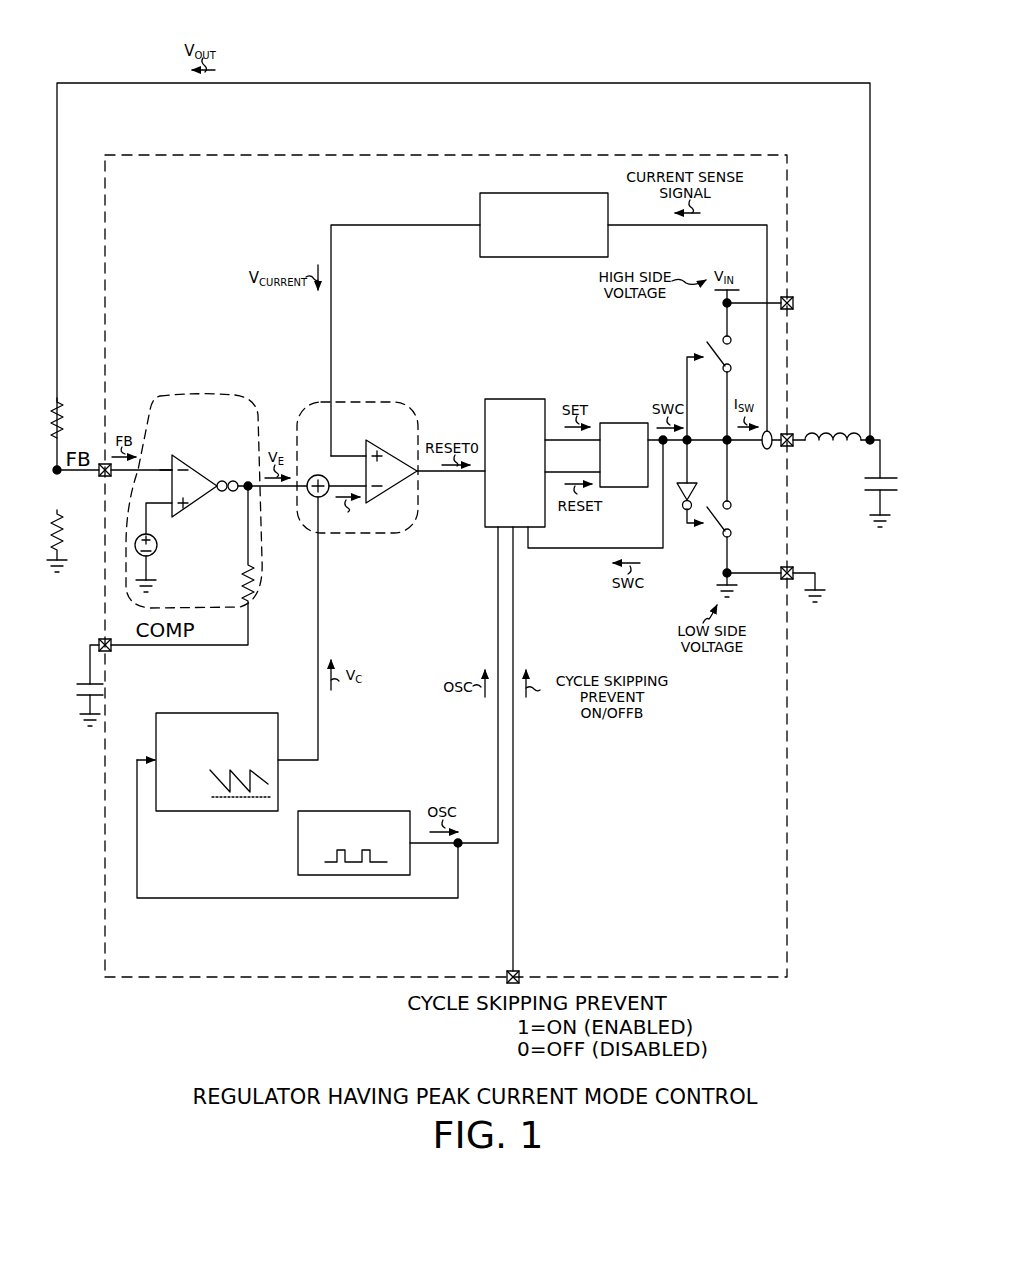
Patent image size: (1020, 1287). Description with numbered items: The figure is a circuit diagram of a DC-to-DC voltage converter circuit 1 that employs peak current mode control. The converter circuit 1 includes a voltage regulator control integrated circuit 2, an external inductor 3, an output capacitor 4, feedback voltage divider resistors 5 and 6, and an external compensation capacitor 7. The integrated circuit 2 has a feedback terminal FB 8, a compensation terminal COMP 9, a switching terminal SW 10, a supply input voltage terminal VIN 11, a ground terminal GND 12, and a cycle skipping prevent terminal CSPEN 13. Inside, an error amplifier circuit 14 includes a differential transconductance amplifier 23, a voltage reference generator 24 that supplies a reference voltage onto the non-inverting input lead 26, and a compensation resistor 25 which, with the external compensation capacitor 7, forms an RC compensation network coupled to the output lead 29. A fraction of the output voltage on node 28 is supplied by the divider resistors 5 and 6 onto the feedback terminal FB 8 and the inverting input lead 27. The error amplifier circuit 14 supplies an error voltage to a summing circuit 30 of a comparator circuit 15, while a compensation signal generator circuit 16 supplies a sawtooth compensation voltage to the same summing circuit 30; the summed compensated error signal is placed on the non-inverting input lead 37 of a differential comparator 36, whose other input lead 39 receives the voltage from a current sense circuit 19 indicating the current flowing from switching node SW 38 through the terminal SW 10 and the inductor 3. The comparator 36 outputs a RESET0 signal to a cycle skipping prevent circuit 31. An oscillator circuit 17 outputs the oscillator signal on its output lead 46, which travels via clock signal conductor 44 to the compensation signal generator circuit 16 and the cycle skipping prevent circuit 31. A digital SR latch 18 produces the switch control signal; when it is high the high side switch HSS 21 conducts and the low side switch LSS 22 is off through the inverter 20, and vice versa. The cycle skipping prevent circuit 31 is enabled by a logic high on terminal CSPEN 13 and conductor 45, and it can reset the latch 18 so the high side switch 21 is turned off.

The DC-to-DC voltage converter circuit 1 is at (790, 74).
The voltage regulator control integrated circuit 2 is at (409, 155).
The inductor 3 is at (836, 429).
The output capacitor 4 is at (863, 488).
The feedback voltage divider resistor 5 is at (63, 412).
The feedback voltage divider resistor 6 is at (63, 524).
The external compensation capacitor 7 is at (77, 690).
The feedback integrated circuit terminal 8 is at (100, 478).
The compensation integrated circuit terminal 9 is at (108, 653).
The switching integrated circuit terminal 10 is at (783, 451).
The supply input voltage integrated circuit terminal 11 is at (792, 312).
The ground integrated circuit terminal 12 is at (786, 582).
The cycle skipping prevent terminal 13 is at (505, 972).
The error amplifier circuit 14 is at (195, 399).
The comparator circuit 15 is at (369, 536).
The compensation signal generator circuit 16 is at (217, 711).
The oscillator circuit 17 is at (351, 811).
The latch 18 is at (620, 423).
The current sense circuit 19 is at (540, 192).
The inverter 20 is at (697, 484).
The high side switch 21 is at (736, 371).
The low side switch 22 is at (737, 518).
The differential transconductance amplifier 23 is at (200, 466).
The voltage reference generator 24 is at (158, 545).
The compensation resistor 25 is at (243, 587).
The non-inverting input lead 26 is at (164, 503).
The inverting input lead 27 is at (166, 466).
The node 28 is at (872, 435).
The output lead 29 is at (247, 482).
The summing circuit 30 is at (314, 474).
The cycle skipping prevent circuit 31 is at (510, 397).
The differential comparator 36 is at (391, 448).
The non-inverting input lead 37 is at (360, 453).
The switching node 38 is at (722, 437).
The inverting input of comparator 39 is at (361, 485).
The clock signal conductor 44 is at (240, 899).
The conductor 45 is at (515, 929).
The output lead 46 is at (415, 846).